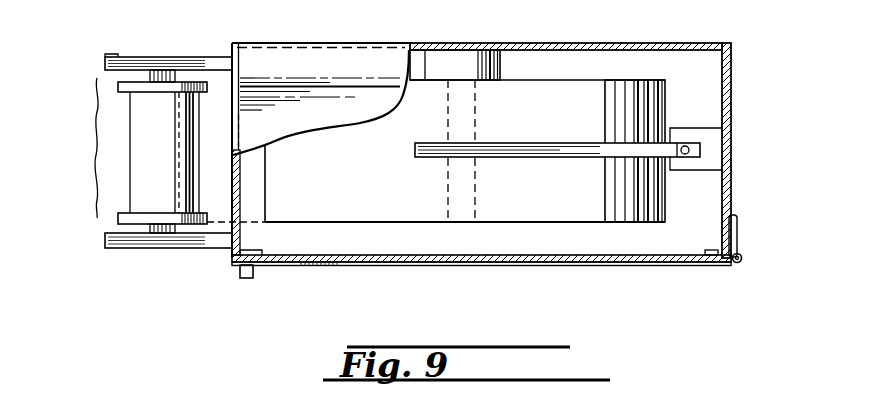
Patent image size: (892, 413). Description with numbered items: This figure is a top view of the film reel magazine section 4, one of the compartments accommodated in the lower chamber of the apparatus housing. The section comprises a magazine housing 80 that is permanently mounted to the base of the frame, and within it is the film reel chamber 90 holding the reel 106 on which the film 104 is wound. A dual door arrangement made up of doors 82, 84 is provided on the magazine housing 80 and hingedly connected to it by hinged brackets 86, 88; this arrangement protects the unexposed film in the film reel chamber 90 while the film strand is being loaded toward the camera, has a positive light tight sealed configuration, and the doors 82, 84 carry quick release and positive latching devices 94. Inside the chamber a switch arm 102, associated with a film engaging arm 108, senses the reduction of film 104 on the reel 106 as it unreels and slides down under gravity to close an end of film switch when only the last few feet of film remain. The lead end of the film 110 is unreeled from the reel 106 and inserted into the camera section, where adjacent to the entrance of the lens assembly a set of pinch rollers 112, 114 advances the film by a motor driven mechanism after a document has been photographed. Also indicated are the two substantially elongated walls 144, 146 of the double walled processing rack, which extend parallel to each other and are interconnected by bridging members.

The film reel magazine section 4 is at (508, 155).
The magazine housing 80 is at (682, 43).
The door 82 is at (388, 266).
The door 84 is at (548, 263).
The hinged bracket 86 is at (743, 256).
The hinged bracket 88 is at (783, 239).
The film reel chamber 90 is at (703, 80).
The quick release and positive latching devices 94 is at (243, 281).
The switch arm 102 is at (700, 152).
The film 104 is at (632, 222).
The reel 106 is at (465, 95).
The film engaging arm 108 is at (517, 147).
The lead end of the film 110 is at (100, 175).
The pinch roller 112 is at (190, 82).
The pinch roller 114 is at (198, 121).
The elongated wall 144 is at (138, 237).
The elongated wall 146 is at (122, 60).